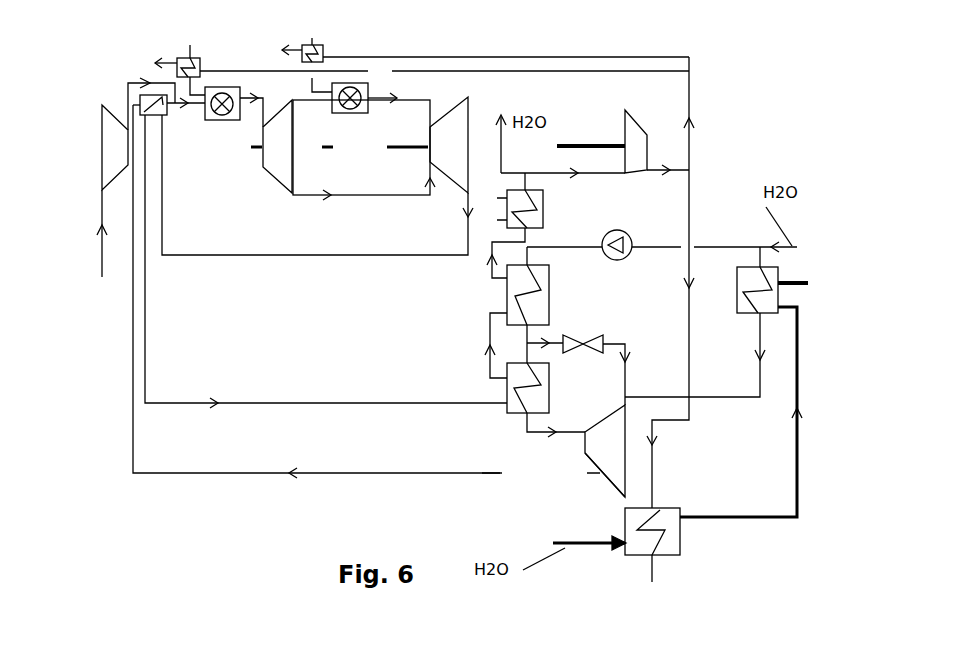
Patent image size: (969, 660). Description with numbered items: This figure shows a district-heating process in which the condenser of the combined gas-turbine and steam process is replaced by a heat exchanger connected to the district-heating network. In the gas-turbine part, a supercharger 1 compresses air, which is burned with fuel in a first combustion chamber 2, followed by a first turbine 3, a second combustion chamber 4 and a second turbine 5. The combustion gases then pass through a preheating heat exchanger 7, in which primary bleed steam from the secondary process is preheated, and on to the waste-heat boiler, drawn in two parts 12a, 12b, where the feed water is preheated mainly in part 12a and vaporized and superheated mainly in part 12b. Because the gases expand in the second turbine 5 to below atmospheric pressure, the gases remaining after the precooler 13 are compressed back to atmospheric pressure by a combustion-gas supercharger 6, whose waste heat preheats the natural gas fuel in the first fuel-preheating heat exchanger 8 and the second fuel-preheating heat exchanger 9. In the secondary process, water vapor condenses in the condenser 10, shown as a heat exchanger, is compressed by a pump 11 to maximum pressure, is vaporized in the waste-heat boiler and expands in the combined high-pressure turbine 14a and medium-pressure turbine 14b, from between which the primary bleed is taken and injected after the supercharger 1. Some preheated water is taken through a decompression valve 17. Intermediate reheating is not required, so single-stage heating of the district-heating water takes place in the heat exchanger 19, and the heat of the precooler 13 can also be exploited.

The supercharger 1 is at (102, 148).
The first combustion chamber 2 is at (229, 120).
The first turbine 3 is at (275, 180).
The second combustion chamber 4 is at (362, 115).
The second turbine 5 is at (468, 134).
The combustion-gas supercharger 6 is at (637, 132).
The preheating heat exchanger 7 is at (167, 115).
The first fuel-preheating heat exchanger 8 is at (177, 73).
The second fuel-preheating heat exchanger 9 is at (323, 60).
The condenser 10 is at (716, 382).
The pump 11 is at (630, 237).
The waste-heat boiler 12a is at (507, 283).
The waste-heat boiler 12b is at (507, 396).
The precooler 13 is at (543, 196).
The high-pressure turbine 14a is at (582, 455).
The medium-pressure turbine 14b is at (610, 483).
The decompression valve 17 is at (597, 338).
The heat exchanger 19 is at (680, 532).